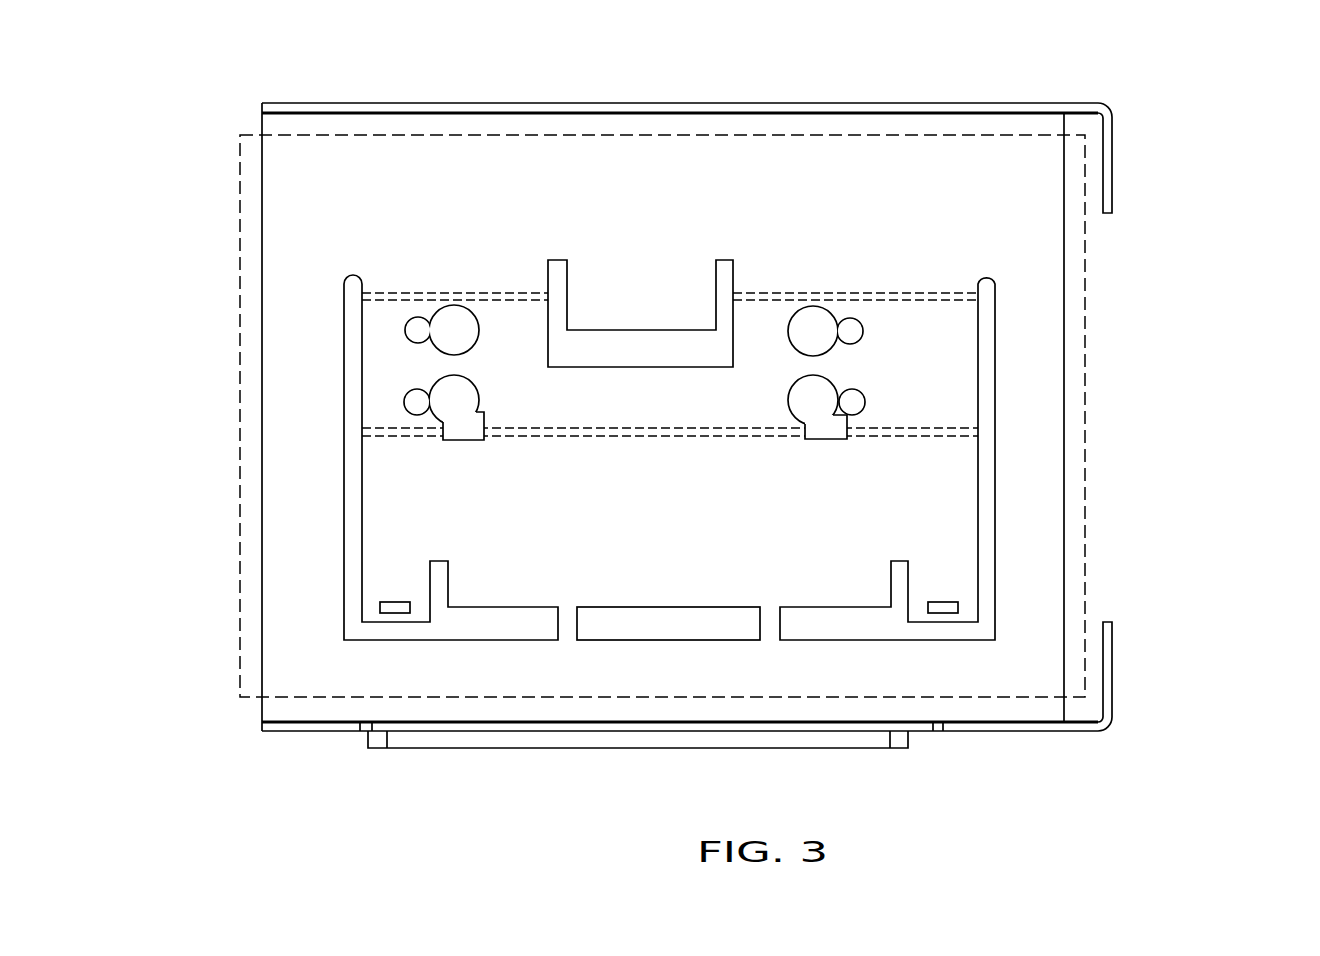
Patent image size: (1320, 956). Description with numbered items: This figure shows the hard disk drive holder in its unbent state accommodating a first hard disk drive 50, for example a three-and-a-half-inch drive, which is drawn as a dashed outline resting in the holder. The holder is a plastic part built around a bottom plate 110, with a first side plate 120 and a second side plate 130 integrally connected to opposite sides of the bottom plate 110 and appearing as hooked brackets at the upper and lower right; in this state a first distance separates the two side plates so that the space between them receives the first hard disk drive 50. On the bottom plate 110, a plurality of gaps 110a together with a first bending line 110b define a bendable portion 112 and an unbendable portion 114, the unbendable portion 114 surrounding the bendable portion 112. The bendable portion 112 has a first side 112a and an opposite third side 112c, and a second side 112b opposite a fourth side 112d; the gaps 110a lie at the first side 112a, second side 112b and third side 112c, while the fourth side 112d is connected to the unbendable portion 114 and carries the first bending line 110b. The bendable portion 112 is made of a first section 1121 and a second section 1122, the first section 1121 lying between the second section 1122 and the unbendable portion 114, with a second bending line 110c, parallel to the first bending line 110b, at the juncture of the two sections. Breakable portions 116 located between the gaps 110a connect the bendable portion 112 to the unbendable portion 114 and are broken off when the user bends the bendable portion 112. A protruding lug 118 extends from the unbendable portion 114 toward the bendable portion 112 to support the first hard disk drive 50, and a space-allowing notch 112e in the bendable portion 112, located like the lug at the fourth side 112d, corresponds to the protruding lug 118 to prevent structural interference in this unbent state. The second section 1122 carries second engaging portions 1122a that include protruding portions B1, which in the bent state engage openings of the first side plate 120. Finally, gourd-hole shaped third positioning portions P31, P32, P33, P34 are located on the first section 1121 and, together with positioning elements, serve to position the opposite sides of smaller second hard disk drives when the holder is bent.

The first hard disk drive 50 is at (240, 168).
The bottom plate 110 is at (1070, 370).
The gaps 110a is at (343, 567).
The first bending line 110b is at (865, 292).
The second bending line 110c is at (768, 428).
The bendable portion 112 is at (152, 339).
The first section 1121 is at (400, 385).
The second section 1122 is at (400, 460).
The second engaging portion 1122a is at (942, 578).
The first side 112a is at (360, 607).
The second side 112b is at (523, 610).
The third side 112c is at (980, 564).
The fourth side 112d is at (942, 293).
The space-allowing notch 112e is at (657, 368).
The unbendable portion 114 is at (313, 668).
The breakable portion 116 is at (573, 622).
The protruding lug 118 is at (650, 312).
The first side plate 120 is at (1010, 103).
The second side plate 130 is at (1043, 727).
The protruding portions B1 is at (942, 617).
The third positioning portion P31 is at (479, 320).
The third positioning portion P32 is at (863, 320).
The third positioning portion P33 is at (818, 441).
The third positioning portion P34 is at (481, 398).